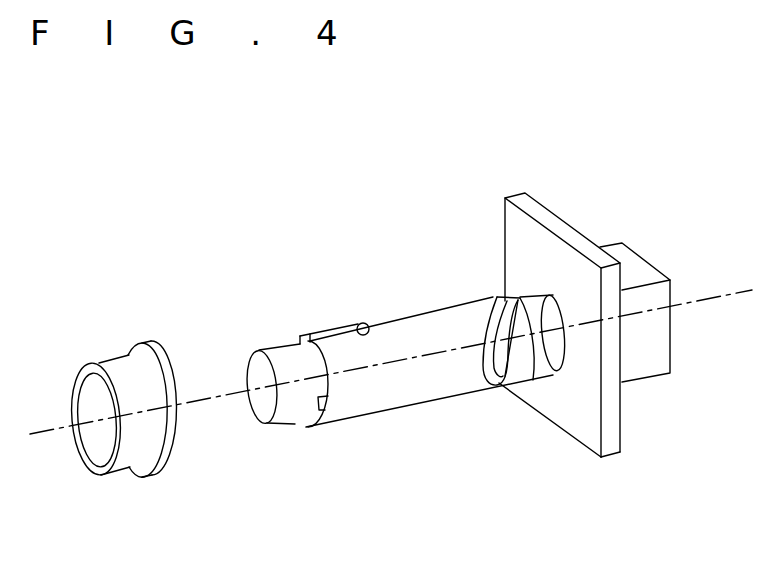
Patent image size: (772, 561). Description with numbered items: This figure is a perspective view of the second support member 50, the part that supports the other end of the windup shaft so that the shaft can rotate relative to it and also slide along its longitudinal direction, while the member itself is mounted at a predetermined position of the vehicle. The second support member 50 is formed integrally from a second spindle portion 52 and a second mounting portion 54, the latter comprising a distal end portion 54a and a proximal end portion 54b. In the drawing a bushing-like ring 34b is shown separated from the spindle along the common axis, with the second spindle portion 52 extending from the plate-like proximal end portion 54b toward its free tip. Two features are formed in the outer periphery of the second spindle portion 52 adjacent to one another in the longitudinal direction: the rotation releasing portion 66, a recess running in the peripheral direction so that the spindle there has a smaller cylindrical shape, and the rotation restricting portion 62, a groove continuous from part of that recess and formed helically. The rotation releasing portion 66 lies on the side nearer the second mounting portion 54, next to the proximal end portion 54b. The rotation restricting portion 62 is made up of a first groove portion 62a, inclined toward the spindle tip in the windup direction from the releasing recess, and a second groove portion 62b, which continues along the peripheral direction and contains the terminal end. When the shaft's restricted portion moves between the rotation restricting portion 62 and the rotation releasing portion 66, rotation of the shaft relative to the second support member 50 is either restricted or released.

The bushing 34b is at (107, 362).
The second support member 50 is at (273, 284).
The second spindle portion 52 is at (386, 321).
The second mounting portion 54 is at (594, 294).
The distal end portion 54a is at (627, 282).
The proximal end portion 54b is at (548, 209).
The rotation restricting portion 62 is at (453, 393).
The first groove portion 62a is at (487, 347).
The second groove portion 62b is at (500, 381).
The rotation releasing portion 66 is at (550, 360).